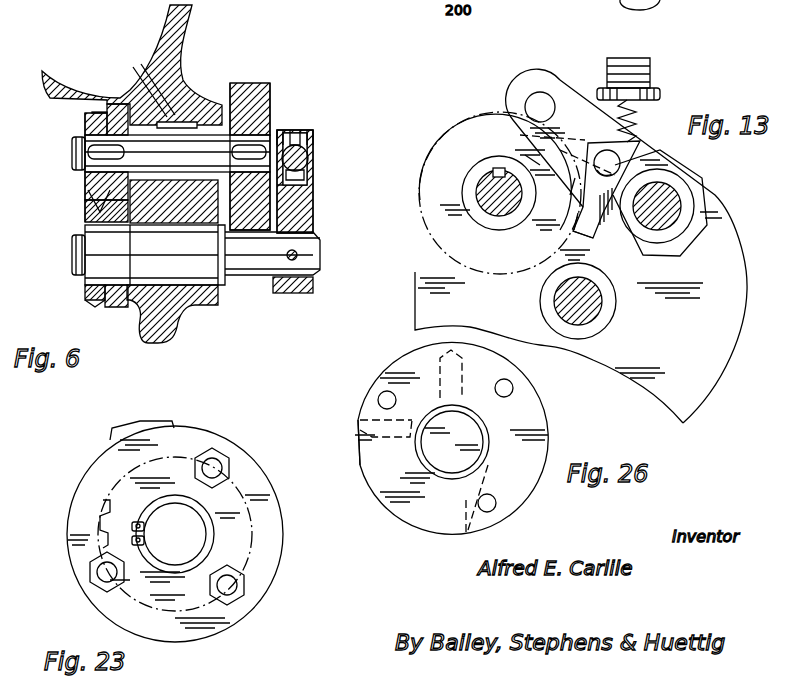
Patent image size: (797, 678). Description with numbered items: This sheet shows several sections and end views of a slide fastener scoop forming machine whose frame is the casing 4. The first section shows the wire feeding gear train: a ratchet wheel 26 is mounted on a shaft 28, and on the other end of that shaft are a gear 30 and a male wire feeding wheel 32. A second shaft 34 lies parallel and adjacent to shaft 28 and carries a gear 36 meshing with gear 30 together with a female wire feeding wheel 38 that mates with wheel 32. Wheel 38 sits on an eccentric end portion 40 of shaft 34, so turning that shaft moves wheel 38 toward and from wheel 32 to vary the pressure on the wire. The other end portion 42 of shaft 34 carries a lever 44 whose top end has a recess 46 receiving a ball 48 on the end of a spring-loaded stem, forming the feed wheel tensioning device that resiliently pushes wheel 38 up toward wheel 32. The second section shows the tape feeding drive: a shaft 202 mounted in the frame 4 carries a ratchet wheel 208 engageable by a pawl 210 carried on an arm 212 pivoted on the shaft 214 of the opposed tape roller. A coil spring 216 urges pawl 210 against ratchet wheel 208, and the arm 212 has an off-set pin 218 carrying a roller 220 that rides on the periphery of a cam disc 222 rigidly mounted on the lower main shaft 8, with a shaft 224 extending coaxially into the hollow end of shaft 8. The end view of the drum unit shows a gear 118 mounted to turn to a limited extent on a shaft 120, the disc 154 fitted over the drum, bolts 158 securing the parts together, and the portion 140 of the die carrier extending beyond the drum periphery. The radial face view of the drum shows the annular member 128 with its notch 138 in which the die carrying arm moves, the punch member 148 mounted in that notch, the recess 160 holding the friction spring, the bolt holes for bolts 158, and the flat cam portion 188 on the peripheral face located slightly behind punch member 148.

In FIG. 6, the casing 4 is at (178, 300).
In FIG. 6, the ratchet wheel 26 is at (252, 103).
In FIG. 6, the shaft 28 is at (168, 145).
In FIG. 6, the gear 30 is at (108, 112).
In FIG. 6, the male wire feeding wheel 32 is at (88, 182).
In FIG. 6, the second shaft 34 is at (188, 265).
In FIG. 6, the gear 36 is at (105, 305).
In FIG. 6, the female wire feeding wheel 38 is at (88, 297).
In FIG. 6, the eccentric end portion 40 is at (95, 255).
In FIG. 6, the other end portion 42 is at (308, 252).
In FIG. 6, the lever 44 is at (303, 215).
In FIG. 6, the recess 46 is at (303, 180).
In FIG. 6, the ball 48 is at (313, 136).
In FIG. 13, the lower main shaft 8 is at (616, 302).
In FIG. 13, the shaft 202 is at (498, 202).
In FIG. 13, the ratchet wheel 208 is at (463, 133).
In FIG. 13, the pawl 210 is at (592, 236).
In FIG. 13, the arm 212 is at (650, 160).
In FIG. 13, the shaft 214 is at (665, 203).
In FIG. 13, the coil spring 216 is at (645, 128).
In FIG. 13, the off-set pin 218 is at (538, 100).
In FIG. 13, the roller 220 is at (558, 82).
In FIG. 13, the cam disc 222 is at (712, 365).
In FIG. 13, the shaft 224 is at (586, 305).
In FIG. 26, the annular member 128 is at (525, 412).
In FIG. 26, the notches 138 is at (432, 518).
In FIG. 26, the punch member 148 is at (368, 420).
In FIG. 26, the bolts 158 is at (492, 508).
In FIG. 23, the bolts 158 is at (216, 462).
In FIG. 26, the recess 160 is at (470, 362).
In FIG. 26, the flat cam portions 188 is at (378, 485).
In FIG. 23, the gear 118 is at (235, 520).
In FIG. 23, the shaft 120 is at (190, 524).
In FIG. 23, the portion 140 is at (127, 430).
In FIG. 23, the discs 154 is at (265, 555).